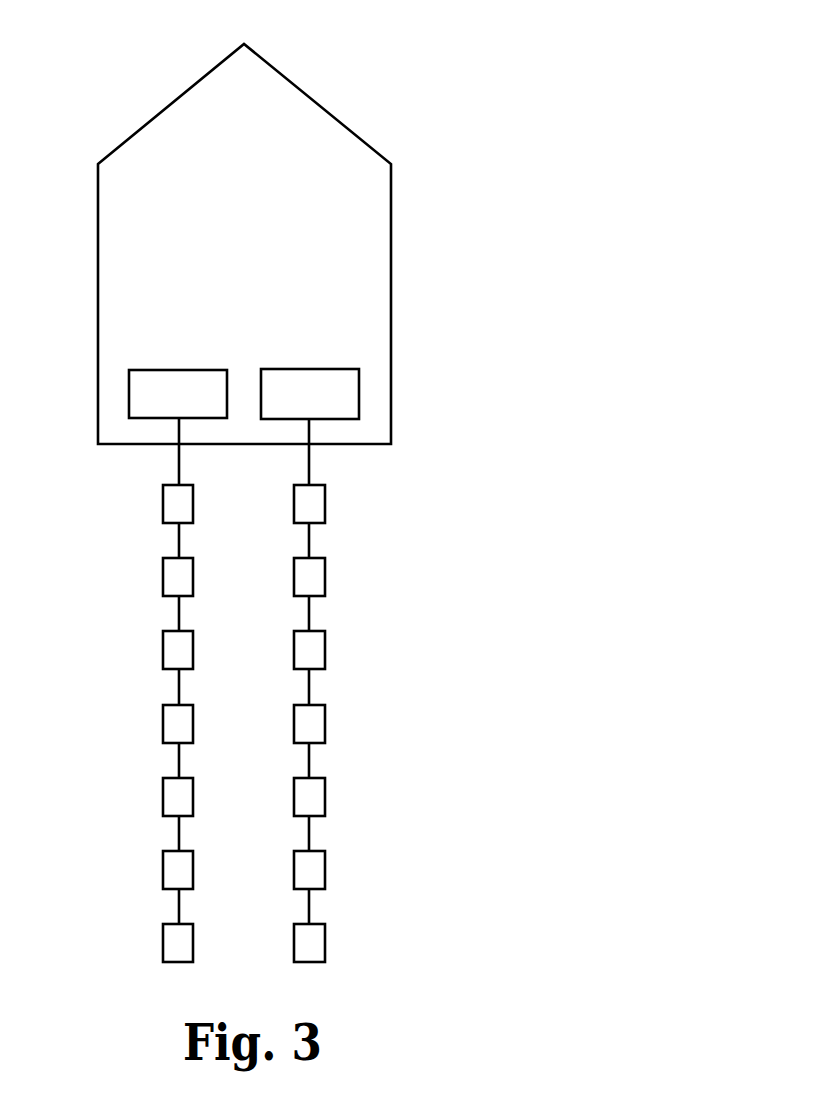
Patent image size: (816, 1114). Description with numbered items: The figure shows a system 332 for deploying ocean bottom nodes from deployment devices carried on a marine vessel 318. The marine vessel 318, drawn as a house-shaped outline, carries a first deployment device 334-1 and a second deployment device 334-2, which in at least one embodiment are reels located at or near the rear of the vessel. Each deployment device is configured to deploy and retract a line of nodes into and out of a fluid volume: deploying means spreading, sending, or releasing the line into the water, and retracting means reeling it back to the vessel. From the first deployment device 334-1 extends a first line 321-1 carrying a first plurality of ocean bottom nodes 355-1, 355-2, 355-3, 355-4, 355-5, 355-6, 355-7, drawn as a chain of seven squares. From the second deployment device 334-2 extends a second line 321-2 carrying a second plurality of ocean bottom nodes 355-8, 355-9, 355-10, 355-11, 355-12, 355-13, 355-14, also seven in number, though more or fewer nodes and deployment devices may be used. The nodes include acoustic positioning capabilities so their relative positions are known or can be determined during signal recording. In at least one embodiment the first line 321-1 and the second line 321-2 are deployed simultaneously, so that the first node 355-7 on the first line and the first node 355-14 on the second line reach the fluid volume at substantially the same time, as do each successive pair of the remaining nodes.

The system 332 is at (391, 58).
The marine vessel 318 is at (391, 220).
The first deployment device 334-1 is at (165, 370).
The second deployment device 334-2 is at (359, 383).
The first line 321-1 is at (179, 541).
The second line 321-2 is at (309, 618).
The ocean bottom node 355-1 is at (163, 501).
The ocean bottom node 355-2 is at (163, 574).
The ocean bottom node 355-3 is at (163, 647).
The ocean bottom node 355-4 is at (163, 721).
The ocean bottom node 355-5 is at (163, 794).
The ocean bottom node 355-6 is at (163, 867).
The ocean bottom node 355-7 is at (163, 940).
The ocean bottom node 355-8 is at (325, 500).
The ocean bottom node 355-9 is at (325, 573).
The ocean bottom node 355-10 is at (325, 646).
The ocean bottom node 355-11 is at (325, 720).
The ocean bottom node 355-12 is at (325, 793).
The ocean bottom node 355-13 is at (325, 866).
The ocean bottom node 355-14 is at (325, 939).